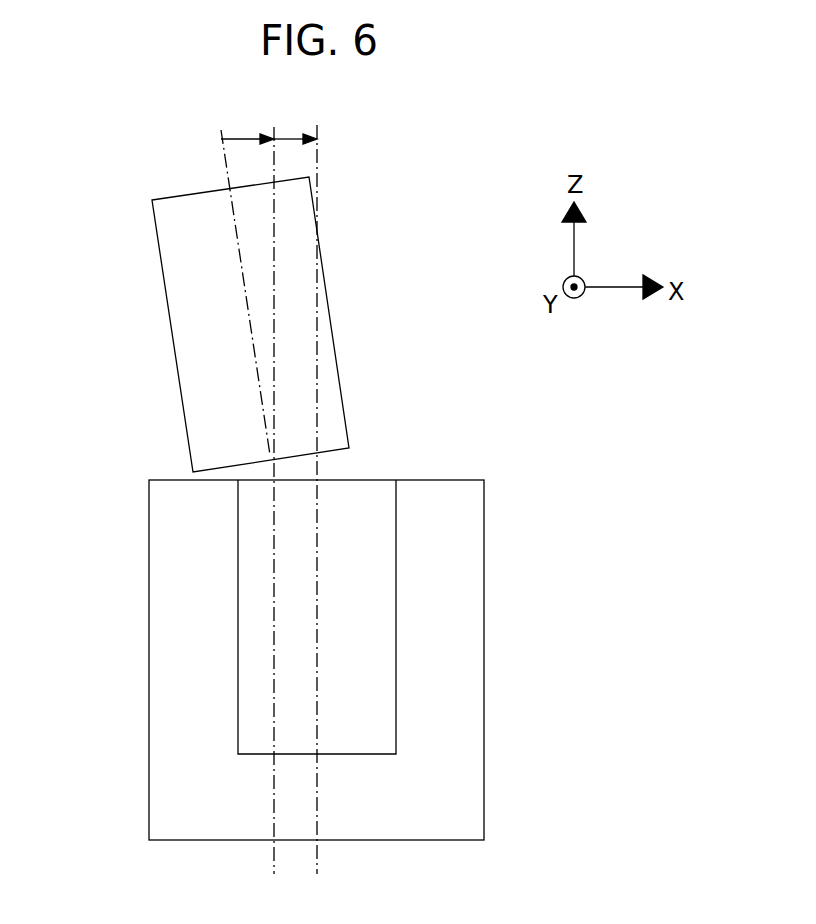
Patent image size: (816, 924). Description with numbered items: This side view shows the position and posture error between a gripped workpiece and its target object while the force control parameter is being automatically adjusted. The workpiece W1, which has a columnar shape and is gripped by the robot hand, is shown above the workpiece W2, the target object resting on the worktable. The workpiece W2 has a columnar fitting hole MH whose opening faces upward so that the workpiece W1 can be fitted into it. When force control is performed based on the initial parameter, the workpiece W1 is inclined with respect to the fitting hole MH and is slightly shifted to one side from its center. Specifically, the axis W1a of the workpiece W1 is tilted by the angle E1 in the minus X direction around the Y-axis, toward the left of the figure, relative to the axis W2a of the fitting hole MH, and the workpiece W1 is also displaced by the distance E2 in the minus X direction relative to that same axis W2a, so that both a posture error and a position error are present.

The workpiece W1 is at (165, 293).
The axis of the workpiece W1 W1a is at (225, 158).
The workpiece W2 is at (149, 657).
The axis of the fitting hole MH W2a is at (308, 516).
The fitting hole MH is at (396, 504).
The angle E1 is at (247, 123).
The distance E2 is at (295, 123).